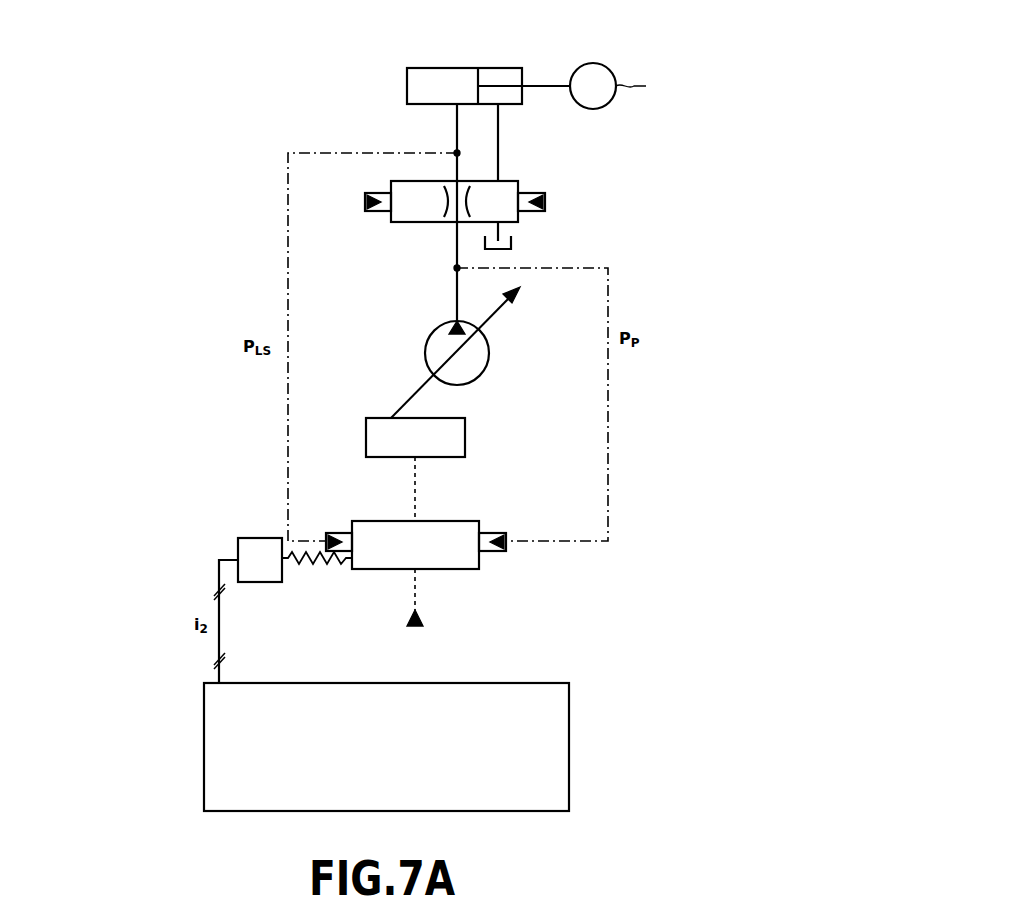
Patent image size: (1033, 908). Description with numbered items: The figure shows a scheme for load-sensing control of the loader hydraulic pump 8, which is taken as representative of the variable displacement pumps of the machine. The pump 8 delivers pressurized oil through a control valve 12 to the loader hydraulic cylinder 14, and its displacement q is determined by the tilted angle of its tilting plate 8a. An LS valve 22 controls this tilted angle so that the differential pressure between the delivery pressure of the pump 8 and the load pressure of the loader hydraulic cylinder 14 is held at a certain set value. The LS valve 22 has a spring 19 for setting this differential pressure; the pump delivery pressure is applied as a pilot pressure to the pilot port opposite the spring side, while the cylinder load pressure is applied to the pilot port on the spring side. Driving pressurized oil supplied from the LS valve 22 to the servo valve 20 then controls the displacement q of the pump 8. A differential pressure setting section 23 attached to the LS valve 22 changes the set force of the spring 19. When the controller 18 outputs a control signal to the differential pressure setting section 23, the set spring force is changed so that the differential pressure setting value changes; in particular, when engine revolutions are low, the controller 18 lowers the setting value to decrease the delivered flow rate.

The loader hydraulic cylinder 14 is at (432, 68).
The loader control valve 12 is at (510, 181).
The loader hydraulic pump 8 is at (445, 326).
The tilting plate 8a is at (498, 296).
The servo valve 20 is at (465, 428).
The LS valve 22 is at (465, 521).
The differential pressure setting section 23 is at (256, 538).
The spring 19 is at (305, 571).
The controller 18 is at (530, 683).